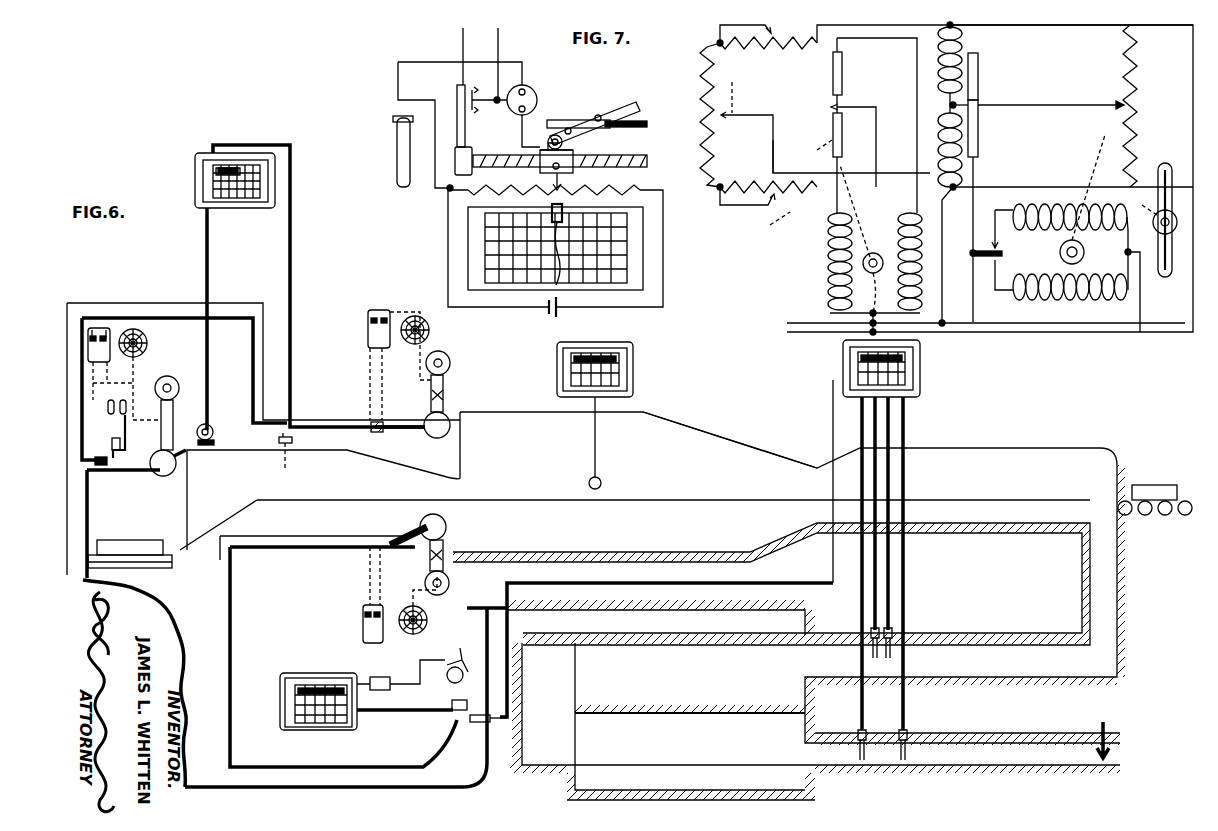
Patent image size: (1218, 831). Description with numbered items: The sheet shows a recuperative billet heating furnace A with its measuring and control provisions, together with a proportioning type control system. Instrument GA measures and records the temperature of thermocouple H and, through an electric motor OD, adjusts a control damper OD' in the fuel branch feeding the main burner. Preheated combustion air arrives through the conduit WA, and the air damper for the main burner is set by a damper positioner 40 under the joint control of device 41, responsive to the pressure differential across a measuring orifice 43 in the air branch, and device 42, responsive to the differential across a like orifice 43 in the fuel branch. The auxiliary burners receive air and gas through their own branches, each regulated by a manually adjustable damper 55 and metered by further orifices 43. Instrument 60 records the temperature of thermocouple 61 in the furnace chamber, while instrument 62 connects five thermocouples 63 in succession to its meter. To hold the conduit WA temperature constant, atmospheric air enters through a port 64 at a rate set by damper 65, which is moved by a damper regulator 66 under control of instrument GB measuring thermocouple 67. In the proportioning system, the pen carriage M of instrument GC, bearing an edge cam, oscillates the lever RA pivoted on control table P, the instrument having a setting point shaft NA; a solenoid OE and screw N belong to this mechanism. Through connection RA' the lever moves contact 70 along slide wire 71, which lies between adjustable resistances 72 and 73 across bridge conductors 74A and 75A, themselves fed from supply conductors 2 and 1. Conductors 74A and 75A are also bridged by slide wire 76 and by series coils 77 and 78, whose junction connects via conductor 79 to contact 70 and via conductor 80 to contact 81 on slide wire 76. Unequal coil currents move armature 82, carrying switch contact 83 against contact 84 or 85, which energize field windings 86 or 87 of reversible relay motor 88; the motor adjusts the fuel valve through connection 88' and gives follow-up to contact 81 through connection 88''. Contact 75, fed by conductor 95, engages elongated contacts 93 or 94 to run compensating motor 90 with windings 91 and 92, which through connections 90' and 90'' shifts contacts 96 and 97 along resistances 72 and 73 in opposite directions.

In FIG. 6, the damper positioner 40 is at (112, 443).
In FIG. 6, the pressure differential device 41 is at (106, 406).
In FIG. 6, the pressure differential device 42 is at (127, 405).
In FIG. 6, the measuring orifice 43 is at (95, 465).
In FIG. 6, the manually adjustable damper 55 is at (423, 430).
In FIG. 6, the temperature measuring and recording instrument 60 is at (640, 366).
In FIG. 6, the thermocouple 61 is at (602, 483).
In FIG. 6, the multi-point recording instrument 62 is at (925, 374).
In FIG. 6, the thermocouple 63 is at (480, 723).
In FIG. 6, the port 64 is at (420, 692).
In FIG. 6, the damper 65 is at (450, 682).
In FIG. 6, the damper regulator 66 is at (458, 667).
In FIG. 6, the thermocouple 67 is at (458, 712).
In FIG. 6, the temperature measuring and recording instrument GA is at (235, 197).
In FIG. 6, the temperature control instrument GB is at (312, 730).
In FIG. 7, the furnace temperature measuring instrument GC is at (660, 292).
In FIG. 6, the preheated air conduit WA is at (67, 542).
In FIG. 6, the electric motor OD is at (222, 434).
In FIG. 6, the control damper OD' is at (231, 406).
In FIG. 7, the thermocouple H is at (397, 150).
In FIG. 6, the thermocouple H is at (279, 440).
In FIG. 6, the furnace A is at (760, 455).
In FIG. 7, the contact 70 is at (724, 116).
In FIG. 7, the slide wire resistance 71 is at (703, 118).
In FIG. 7, the adjustable resistance 72 is at (758, 50).
In FIG. 7, the adjustable resistance 73 is at (757, 184).
In FIG. 7, the bridge circuit conductor 74A is at (1071, 36).
In FIG. 7, the contact 75 is at (876, 107).
In FIG. 7, the bridge circuit conductor 75A is at (1047, 186).
In FIG. 7, the slide wire resistance 76 is at (1124, 72).
In FIG. 7, the solenoid coil 77 is at (963, 47).
In FIG. 7, the solenoid coil 78 is at (963, 164).
In FIG. 7, the conductor 79 is at (773, 155).
In FIG. 7, the conductor 80 is at (1040, 104).
In FIG. 7, the contact 81 is at (1116, 105).
In FIG. 7, the armature 82 is at (980, 92).
In FIG. 7, the switch contact 83 is at (990, 245).
In FIG. 7, the contact 84 is at (999, 249).
In FIG. 7, the contact 85 is at (997, 266).
In FIG. 7, the field winding 86 is at (1070, 210).
In FIG. 7, the field winding 87 is at (1050, 298).
In FIG. 7, the reversible relay motor 88 is at (1088, 258).
In FIG. 7, the operating connection 88' is at (1145, 201).
In FIG. 7, the operating connection 88'' is at (1081, 179).
In FIG. 7, the reversible electric motor 90 is at (862, 239).
In FIG. 7, the connection 90' is at (812, 152).
In FIG. 7, the connection 90'' is at (799, 231).
In FIG. 7, the motor winding 91 is at (828, 289).
In FIG. 7, the motor winding 92 is at (893, 257).
In FIG. 7, the elongated contact 93 is at (843, 142).
In FIG. 7, the elongated contact 94 is at (843, 72).
In FIG. 7, the conductor 95 is at (943, 199).
In FIG. 7, the contact 96 is at (773, 31).
In FIG. 7, the contact 97 is at (776, 203).
In FIG. 7, the lever RA is at (594, 108).
In FIG. 7, the connection RA' is at (753, 97).
In FIG. 7, the control table P is at (588, 120).
In FIG. 7, the control setting point shaft NA is at (640, 121).
In FIG. 7, the solenoid OE is at (470, 150).
In FIG. 7, the pen carriage M is at (545, 171).
In FIG. 7, the screw N is at (642, 165).
In FIG. 7, the supply conductor 1 is at (800, 323).
In FIG. 7, the supply conductor 2 is at (818, 333).